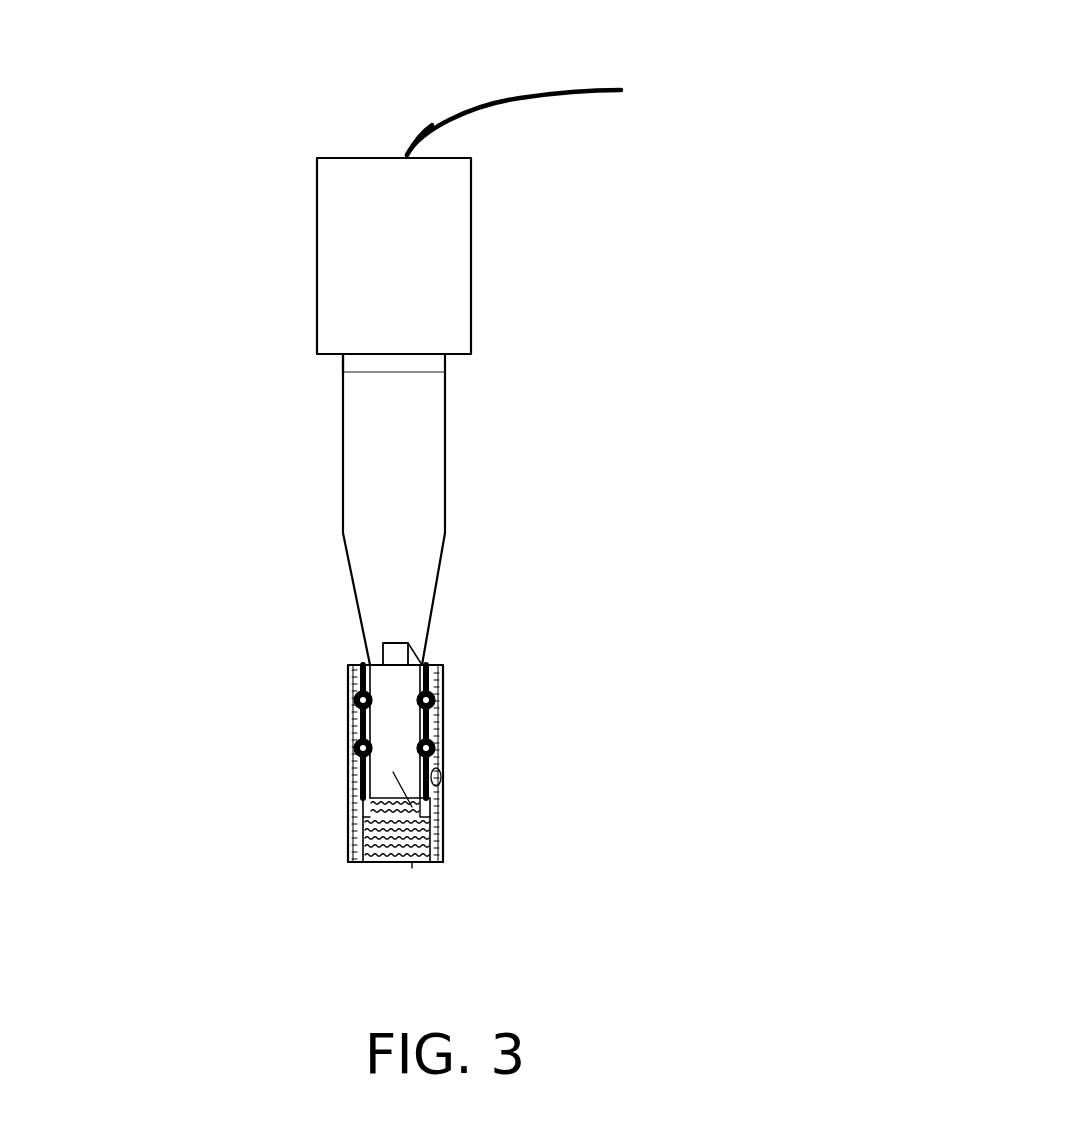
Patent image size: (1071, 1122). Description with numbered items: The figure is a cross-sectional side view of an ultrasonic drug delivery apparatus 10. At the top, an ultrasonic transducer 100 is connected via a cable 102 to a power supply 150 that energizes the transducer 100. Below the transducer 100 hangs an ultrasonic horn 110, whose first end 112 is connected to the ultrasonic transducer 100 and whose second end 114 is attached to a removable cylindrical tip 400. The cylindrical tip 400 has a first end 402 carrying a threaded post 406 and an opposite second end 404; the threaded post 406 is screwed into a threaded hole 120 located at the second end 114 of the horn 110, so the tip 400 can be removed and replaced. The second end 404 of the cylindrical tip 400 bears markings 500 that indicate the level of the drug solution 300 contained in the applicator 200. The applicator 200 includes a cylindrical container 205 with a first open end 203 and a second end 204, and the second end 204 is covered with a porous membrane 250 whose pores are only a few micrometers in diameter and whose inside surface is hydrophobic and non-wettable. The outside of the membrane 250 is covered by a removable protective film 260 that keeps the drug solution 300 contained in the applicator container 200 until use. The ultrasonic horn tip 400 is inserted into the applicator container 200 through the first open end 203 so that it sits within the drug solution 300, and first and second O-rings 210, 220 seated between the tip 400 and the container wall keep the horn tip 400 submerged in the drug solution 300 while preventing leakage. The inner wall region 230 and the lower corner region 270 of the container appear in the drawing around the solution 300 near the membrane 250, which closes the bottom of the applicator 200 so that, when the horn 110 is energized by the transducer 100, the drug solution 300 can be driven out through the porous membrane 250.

The dispensing system 10 is at (227, 130).
The ultrasonic transducer 100 is at (472, 253).
The cable 102 is at (440, 115).
The power supply 150 is at (552, 92).
The ultrasonic horn 110 is at (447, 437).
The first end 112 is at (360, 355).
The second end 114 is at (378, 656).
The threaded hole 120 is at (413, 642).
The applicator 200 is at (207, 654).
The first open end 203 is at (395, 695).
The cylindrical container 205 is at (352, 832).
The first O-ring 210 is at (443, 728).
The second O-ring 220 is at (443, 768).
The inner wall 230 is at (440, 798).
The porous membrane 250 is at (380, 867).
The second end 204 is at (393, 870).
The removable protective film 260 is at (405, 870).
The bottom corner 270 is at (437, 868).
The drug solution 300 is at (350, 857).
The removable cylindrical tip 400 is at (443, 667).
The first end 402 is at (360, 668).
The second end 404 is at (438, 823).
The threaded post 406 is at (395, 652).
The markings 500 is at (383, 797).